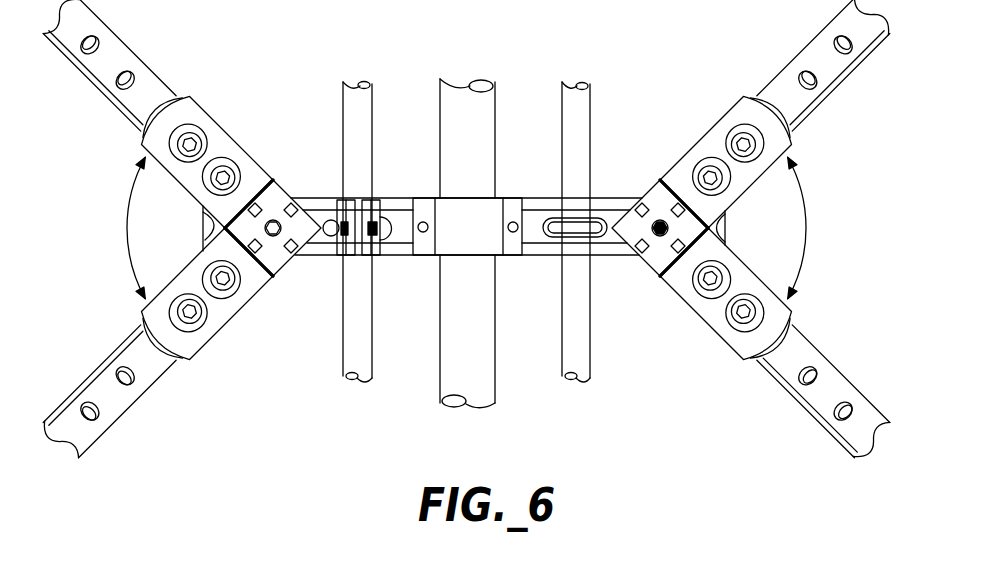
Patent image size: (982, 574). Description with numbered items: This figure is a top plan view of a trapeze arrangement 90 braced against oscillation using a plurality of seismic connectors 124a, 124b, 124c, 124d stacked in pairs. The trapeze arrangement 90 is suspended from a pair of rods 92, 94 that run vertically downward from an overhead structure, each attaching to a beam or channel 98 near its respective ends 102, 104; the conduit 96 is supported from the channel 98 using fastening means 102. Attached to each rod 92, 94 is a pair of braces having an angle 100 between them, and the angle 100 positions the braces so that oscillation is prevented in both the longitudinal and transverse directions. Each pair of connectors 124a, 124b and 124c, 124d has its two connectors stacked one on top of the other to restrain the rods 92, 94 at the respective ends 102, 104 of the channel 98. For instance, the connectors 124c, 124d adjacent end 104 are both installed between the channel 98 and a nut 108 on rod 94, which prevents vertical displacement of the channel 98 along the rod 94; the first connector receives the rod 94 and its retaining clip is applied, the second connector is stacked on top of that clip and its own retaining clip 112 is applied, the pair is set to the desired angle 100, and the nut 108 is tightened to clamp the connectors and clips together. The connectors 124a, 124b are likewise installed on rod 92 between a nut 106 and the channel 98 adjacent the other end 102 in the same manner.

The trapeze arrangement 90 is at (619, 84).
The rod 92 is at (275, 210).
The rod 94 is at (657, 218).
The tubes 96 is at (372, 82).
The channel 98 is at (540, 197).
The angle 100 is at (127, 213).
The end 102 is at (203, 236).
The end 104 is at (727, 229).
The nut 106 is at (278, 258).
The nut 108 is at (662, 278).
The retaining clip 112 is at (626, 208).
The connector 124a is at (222, 142).
The connector 124b is at (226, 318).
The connector 124c is at (741, 116).
The connector 124d is at (721, 325).